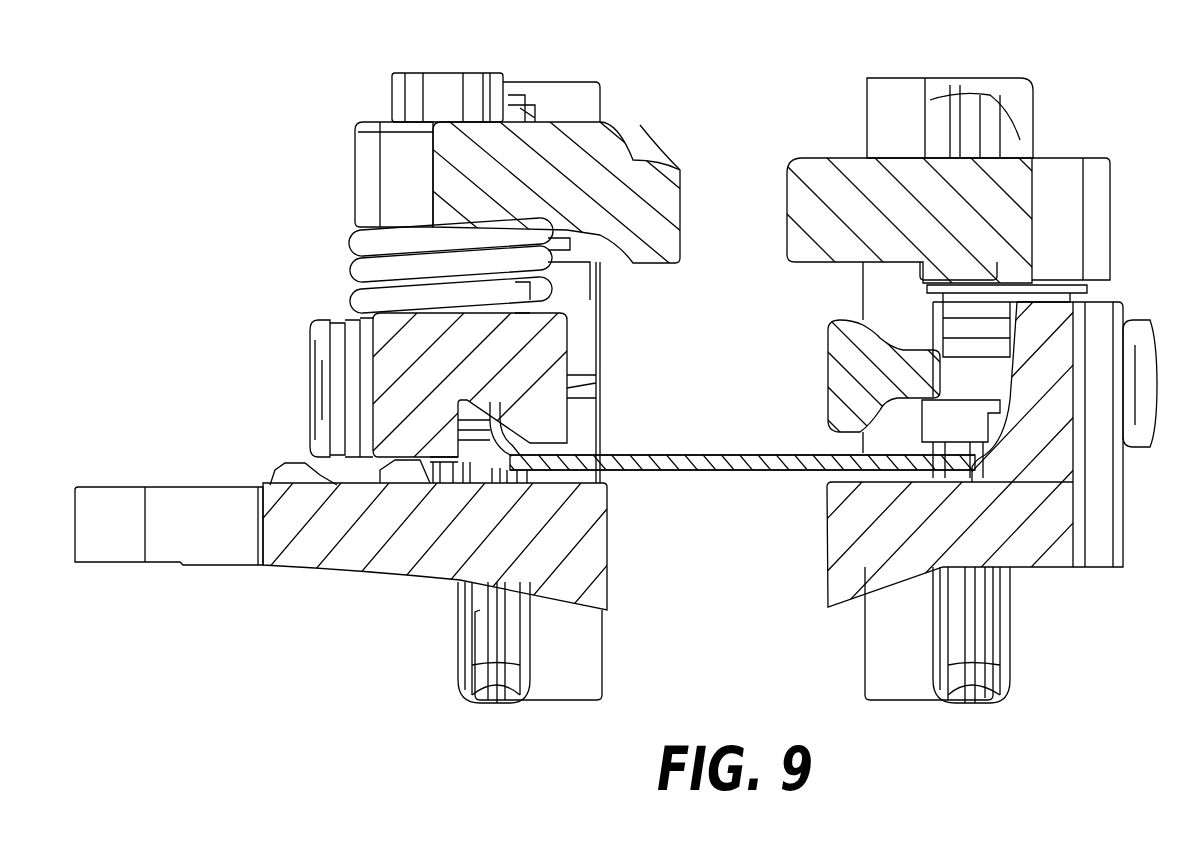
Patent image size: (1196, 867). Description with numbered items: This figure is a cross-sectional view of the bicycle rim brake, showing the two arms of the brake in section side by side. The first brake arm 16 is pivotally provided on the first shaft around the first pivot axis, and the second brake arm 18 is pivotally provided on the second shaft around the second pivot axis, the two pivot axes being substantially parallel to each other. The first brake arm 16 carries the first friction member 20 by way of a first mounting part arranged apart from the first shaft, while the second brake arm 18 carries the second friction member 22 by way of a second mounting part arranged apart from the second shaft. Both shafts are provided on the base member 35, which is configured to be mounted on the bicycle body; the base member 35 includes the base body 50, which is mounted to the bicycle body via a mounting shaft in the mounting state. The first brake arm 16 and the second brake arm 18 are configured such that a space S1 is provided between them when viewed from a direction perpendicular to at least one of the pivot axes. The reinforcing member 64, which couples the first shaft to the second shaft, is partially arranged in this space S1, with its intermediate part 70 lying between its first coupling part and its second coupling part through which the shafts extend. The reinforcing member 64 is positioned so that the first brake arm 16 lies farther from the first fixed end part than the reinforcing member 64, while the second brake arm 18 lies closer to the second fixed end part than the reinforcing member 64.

The first brake arm 16 is at (607, 612).
The second brake arm 18 is at (567, 343).
The first friction member 20 is at (1013, 642).
The second friction member 22 is at (457, 650).
The base member 35 is at (830, 147).
The base body 50 is at (800, 183).
The reinforcing member 64 is at (688, 472).
The intermediate part 70 is at (758, 462).
The space S1 is at (582, 445).